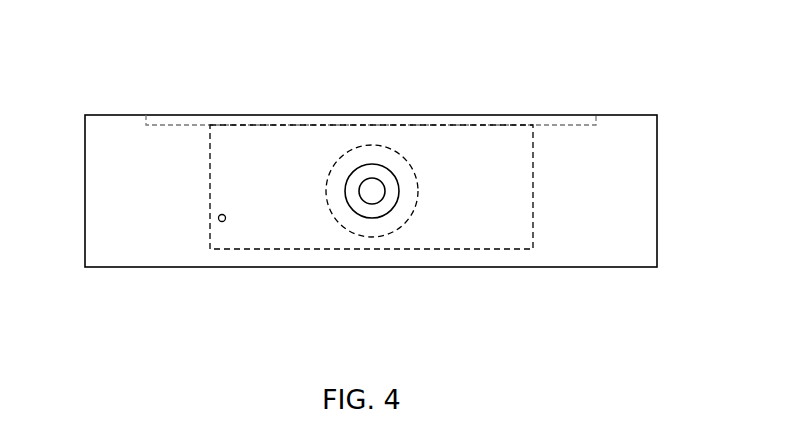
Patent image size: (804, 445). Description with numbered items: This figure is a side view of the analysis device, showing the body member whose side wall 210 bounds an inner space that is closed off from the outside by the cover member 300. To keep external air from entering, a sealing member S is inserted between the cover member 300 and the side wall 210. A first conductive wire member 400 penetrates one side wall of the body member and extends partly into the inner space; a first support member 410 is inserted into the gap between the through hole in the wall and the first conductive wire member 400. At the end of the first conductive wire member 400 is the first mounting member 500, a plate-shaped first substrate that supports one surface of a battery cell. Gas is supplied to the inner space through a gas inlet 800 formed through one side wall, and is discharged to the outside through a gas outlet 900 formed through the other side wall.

The side wall 210 is at (100, 114).
The cover member 300 is at (323, 114).
The sealing member S is at (160, 123).
The gas outlet 900 is at (525, 146).
The first mounting member 500 is at (410, 217).
The first support member 410 is at (353, 202).
The first conductive wire member 400 is at (375, 195).
The gas inlet 800 is at (224, 222).